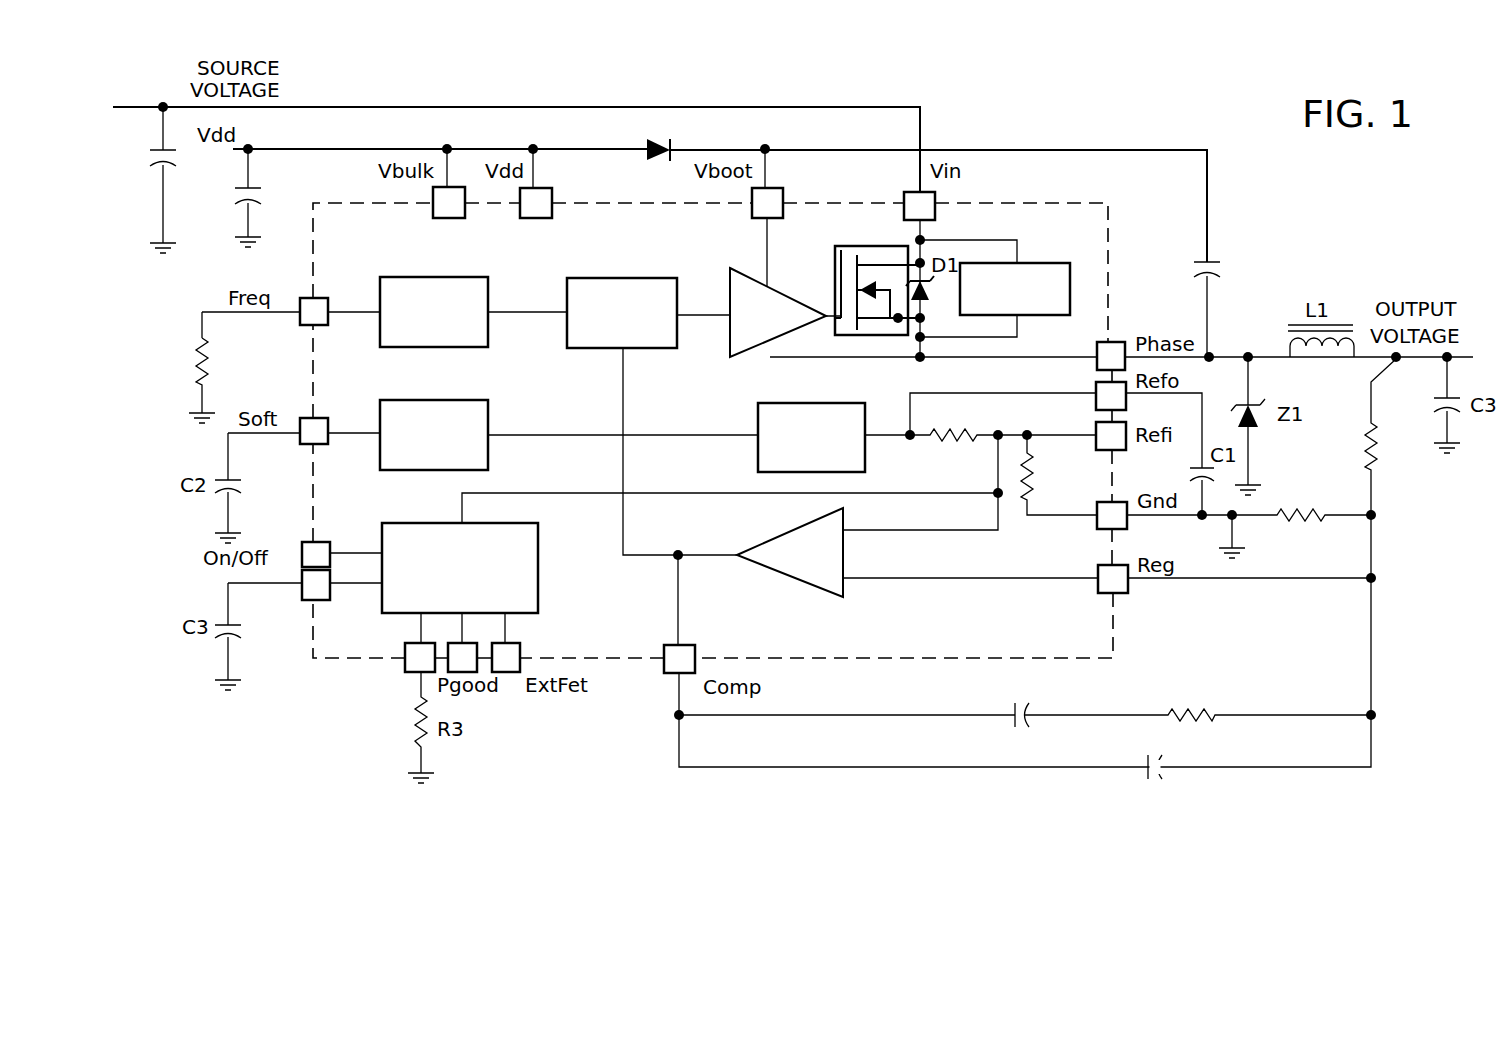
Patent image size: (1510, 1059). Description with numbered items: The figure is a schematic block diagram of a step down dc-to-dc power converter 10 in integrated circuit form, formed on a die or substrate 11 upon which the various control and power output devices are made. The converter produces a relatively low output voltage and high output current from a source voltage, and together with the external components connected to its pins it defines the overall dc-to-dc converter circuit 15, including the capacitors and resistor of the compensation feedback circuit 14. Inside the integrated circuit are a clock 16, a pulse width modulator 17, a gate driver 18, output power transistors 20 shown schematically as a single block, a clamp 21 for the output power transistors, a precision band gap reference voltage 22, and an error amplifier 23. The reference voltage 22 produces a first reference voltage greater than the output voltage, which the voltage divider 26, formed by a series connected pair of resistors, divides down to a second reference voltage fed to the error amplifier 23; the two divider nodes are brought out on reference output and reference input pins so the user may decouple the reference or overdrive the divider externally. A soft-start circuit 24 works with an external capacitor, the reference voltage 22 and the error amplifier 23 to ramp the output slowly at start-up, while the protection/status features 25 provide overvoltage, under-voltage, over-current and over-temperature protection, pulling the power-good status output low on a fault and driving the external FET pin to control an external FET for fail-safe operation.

The dc-to-dc power converter 10 is at (1062, 192).
The die or substrate 11 is at (1113, 236).
The compensation feedback circuit 14 is at (1222, 693).
The dc-to-dc converter circuit 15 is at (1146, 110).
The clock 16 is at (457, 278).
The pulse width modulator 17 is at (646, 279).
The gate driver 18 is at (779, 297).
The output power transistors 20 is at (843, 236).
The clamp 21 is at (1040, 264).
The reference voltage 22 is at (826, 404).
The error amplifier 23 is at (776, 538).
The soft-start circuit 24 is at (457, 402).
The protection/status features 25 is at (407, 524).
The voltage divider 26 is at (962, 456).